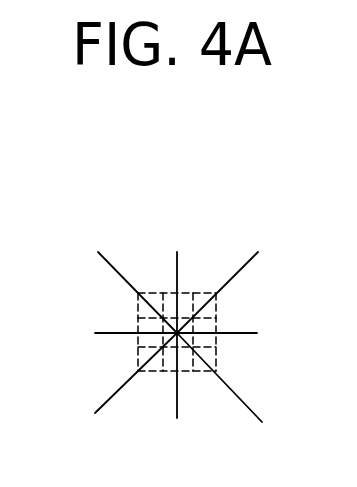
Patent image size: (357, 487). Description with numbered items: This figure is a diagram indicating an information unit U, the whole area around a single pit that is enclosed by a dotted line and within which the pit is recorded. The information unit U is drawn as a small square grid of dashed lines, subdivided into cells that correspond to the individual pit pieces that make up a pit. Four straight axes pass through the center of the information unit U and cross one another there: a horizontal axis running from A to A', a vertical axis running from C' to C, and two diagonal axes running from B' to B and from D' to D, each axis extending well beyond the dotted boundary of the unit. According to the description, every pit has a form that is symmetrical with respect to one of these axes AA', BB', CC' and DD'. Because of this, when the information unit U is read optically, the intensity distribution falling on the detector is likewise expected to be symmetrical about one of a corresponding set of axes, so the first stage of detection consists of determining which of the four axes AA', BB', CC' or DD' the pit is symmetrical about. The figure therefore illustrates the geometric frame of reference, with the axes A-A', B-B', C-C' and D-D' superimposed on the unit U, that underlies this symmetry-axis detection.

The information unit U is at (138, 299).
The end point A of axis AA' A is at (230, 336).
The end point A' of axis AA' A' is at (117, 332).
The end point B of axis BB' B is at (235, 393).
The end point B' of axis BB' B' is at (126, 273).
The end point C of axis CC' C is at (179, 396).
The end point C' of axis CC' C' is at (179, 268).
The end point D of axis DD' D is at (124, 392).
The end point D' of axis DD' D' is at (231, 273).